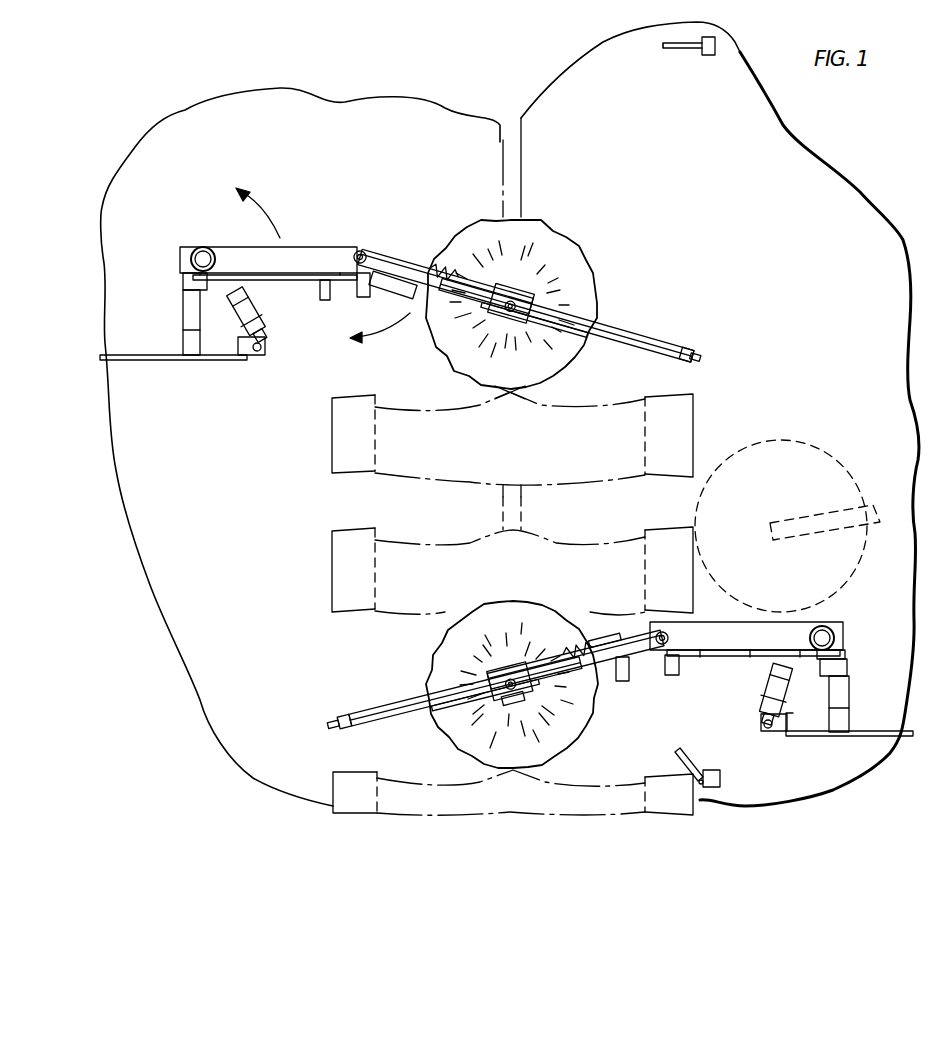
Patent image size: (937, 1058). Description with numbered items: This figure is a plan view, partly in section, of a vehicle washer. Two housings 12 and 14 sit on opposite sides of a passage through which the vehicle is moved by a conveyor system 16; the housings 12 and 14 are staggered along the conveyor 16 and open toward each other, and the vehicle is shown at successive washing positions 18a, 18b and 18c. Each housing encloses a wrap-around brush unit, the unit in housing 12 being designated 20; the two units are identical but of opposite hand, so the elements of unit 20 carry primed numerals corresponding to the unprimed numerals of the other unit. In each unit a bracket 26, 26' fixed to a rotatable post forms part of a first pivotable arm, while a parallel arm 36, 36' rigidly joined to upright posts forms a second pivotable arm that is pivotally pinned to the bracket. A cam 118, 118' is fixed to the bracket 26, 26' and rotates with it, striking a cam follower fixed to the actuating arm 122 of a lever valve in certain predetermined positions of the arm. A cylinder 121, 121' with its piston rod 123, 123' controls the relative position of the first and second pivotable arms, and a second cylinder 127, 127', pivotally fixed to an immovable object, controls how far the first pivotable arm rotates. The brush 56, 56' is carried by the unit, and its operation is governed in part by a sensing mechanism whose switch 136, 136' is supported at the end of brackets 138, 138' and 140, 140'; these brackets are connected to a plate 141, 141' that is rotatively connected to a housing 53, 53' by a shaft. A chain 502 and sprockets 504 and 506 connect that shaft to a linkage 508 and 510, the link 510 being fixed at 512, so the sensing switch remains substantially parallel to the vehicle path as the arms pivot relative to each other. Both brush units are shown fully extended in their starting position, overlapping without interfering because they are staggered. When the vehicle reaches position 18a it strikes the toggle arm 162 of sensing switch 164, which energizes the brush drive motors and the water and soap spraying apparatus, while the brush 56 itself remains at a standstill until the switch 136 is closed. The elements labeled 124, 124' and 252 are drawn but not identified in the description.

The housing 12 is at (148, 361).
The housing 14 is at (891, 760).
The conveyor system 16 is at (522, 188).
The vehicle washing position 18a is at (336, 780).
The vehicle washing position 18b is at (338, 572).
The vehicle washing position 18c is at (335, 418).
The wrap-around brush unit 20 is at (172, 221).
The bracket 26 is at (746, 662).
The bracket 26' is at (268, 240).
The arm 36 is at (686, 578).
The arm 36' is at (443, 278).
The housing 53 is at (510, 681).
The housing 53' is at (511, 303).
The brush 56 is at (625, 587).
The brush 56' is at (521, 304).
The cam 118 is at (850, 626).
The cam 118' is at (208, 238).
The cylinder 121 is at (676, 681).
The cylinder 121' is at (318, 297).
The actuating arm 122 is at (848, 670).
The piston rod 123 is at (627, 682).
The piston rod 123' is at (382, 301).
The post 124 is at (861, 704).
The post 124' is at (168, 314).
The cylinder 127 is at (755, 696).
The cylinder 127' is at (266, 315).
The switch 136 is at (333, 724).
The switch 136' is at (695, 357).
The bracket 138 is at (485, 695).
The bracket 138' is at (534, 319).
The bracket 140 is at (459, 693).
The bracket 140' is at (566, 320).
The plate 141 is at (510, 684).
The plate 141' is at (510, 306).
The toggle arm 162 is at (680, 756).
The sensing switch 164 is at (721, 781).
The bolt 252 is at (702, 55).
The chain 502 is at (604, 640).
The sprocket 504 is at (513, 698).
The sprocket 506 is at (662, 638).
The linkage 508 is at (679, 652).
The link 510 is at (740, 655).
The fixed point 512 is at (845, 657).